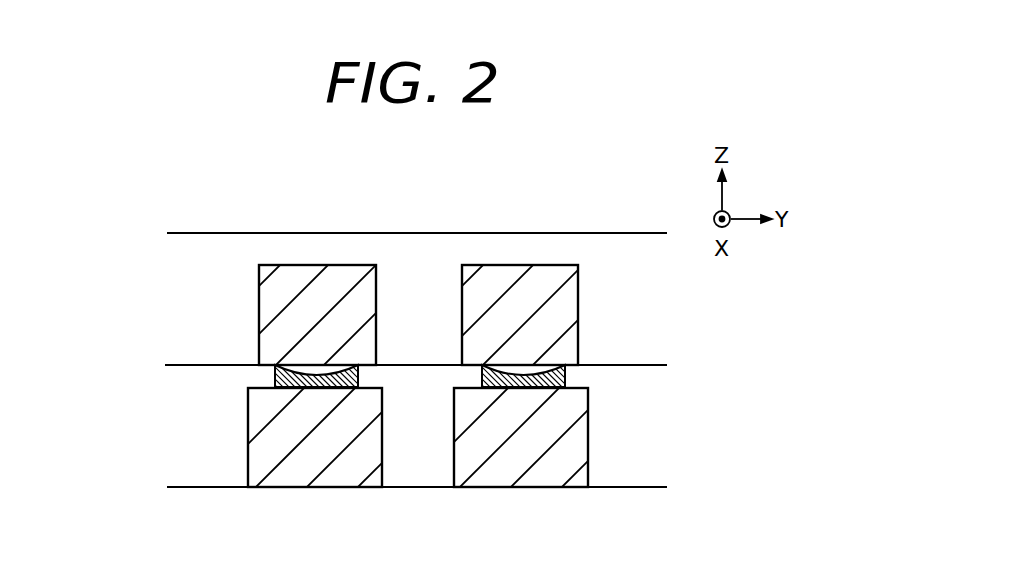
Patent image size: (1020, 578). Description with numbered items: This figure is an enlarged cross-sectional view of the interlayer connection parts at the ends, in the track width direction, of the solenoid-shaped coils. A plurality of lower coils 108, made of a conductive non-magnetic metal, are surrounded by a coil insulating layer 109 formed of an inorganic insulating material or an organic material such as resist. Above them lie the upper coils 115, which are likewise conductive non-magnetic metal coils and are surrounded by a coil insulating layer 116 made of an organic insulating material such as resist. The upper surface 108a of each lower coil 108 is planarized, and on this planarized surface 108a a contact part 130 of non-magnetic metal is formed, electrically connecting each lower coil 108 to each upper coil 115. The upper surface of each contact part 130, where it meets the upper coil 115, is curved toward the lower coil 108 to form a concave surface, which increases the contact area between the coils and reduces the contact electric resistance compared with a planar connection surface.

The coil insulating layer 116 is at (190, 240).
The upper coils 115 is at (333, 268).
The contact part 130 is at (275, 380).
The lower coils 108 is at (330, 477).
The upper surface of lower coil 108a is at (362, 390).
The coil insulating layer 109 is at (208, 477).